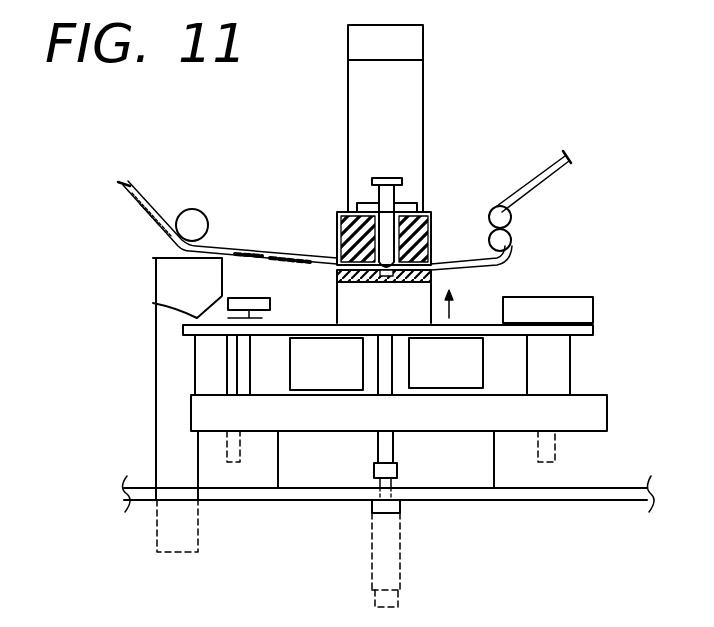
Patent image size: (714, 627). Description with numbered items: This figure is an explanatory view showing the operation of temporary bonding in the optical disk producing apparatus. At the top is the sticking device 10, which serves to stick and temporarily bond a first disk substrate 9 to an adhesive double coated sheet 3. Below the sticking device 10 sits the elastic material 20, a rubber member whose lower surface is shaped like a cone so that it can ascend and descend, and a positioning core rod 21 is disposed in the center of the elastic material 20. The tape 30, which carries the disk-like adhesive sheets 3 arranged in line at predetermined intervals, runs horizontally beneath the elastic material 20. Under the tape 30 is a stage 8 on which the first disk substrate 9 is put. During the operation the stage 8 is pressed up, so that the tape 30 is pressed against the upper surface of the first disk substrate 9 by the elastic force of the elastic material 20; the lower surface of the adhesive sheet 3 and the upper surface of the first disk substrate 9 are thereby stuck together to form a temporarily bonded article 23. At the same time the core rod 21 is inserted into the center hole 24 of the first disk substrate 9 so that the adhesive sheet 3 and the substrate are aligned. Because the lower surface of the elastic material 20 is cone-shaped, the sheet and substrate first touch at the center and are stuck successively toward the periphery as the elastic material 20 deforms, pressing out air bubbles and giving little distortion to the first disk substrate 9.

The sticking device 10 is at (445, 88).
The positioning core rod 21 is at (392, 198).
The elastic material 20 is at (337, 230).
The first disk substrate 9 is at (433, 282).
The stage 8 is at (345, 302).
The center hole of the first disk substrate 24 is at (392, 273).
The adhesive double coated sheet 3 is at (470, 268).
The tape 30 is at (258, 248).
The temporarily bonded article 23 is at (576, 203).